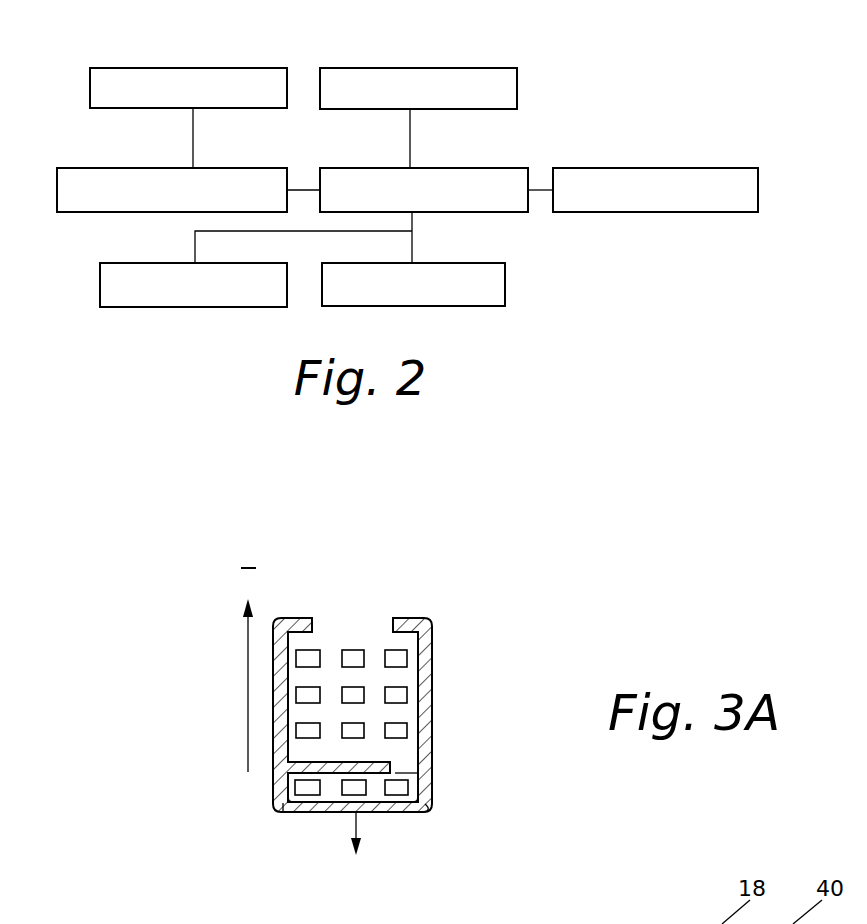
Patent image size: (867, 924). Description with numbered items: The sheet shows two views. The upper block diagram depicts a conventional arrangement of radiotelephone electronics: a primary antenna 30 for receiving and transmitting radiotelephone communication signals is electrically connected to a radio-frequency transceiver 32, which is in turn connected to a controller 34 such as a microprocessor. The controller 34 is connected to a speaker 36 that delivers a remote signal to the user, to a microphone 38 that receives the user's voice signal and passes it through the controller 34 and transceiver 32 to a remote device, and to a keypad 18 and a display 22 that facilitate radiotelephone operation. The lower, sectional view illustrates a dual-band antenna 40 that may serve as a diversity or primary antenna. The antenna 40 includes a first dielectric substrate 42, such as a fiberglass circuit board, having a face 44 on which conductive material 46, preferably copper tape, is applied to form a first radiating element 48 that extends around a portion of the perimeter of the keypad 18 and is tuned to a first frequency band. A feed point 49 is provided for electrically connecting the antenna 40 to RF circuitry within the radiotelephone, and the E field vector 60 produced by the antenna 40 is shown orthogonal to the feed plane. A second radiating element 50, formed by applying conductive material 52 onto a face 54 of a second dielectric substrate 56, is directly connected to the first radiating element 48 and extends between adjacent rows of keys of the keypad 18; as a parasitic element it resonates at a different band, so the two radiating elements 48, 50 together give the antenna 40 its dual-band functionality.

In FIG. 2, the keypad 18 is at (120, 263).
In FIG. 3A, the keypad 18 is at (360, 632).
In FIG. 2, the display 22 is at (487, 263).
In FIG. 2, the primary antenna 30 is at (256, 68).
In FIG. 2, the radio-frequency transceiver 32 is at (250, 168).
In FIG. 2, the controller 34 is at (500, 168).
In FIG. 2, the speaker 36 is at (490, 68).
In FIG. 2, the microphone 38 is at (725, 168).
In FIG. 3A, the dual-band antenna 40 is at (480, 664).
In FIG. 3A, the first dielectric substrate 42 is at (297, 777).
In FIG. 3A, the face 44 is at (435, 805).
In FIG. 3A, the conductive material 46 is at (283, 805).
In FIG. 3A, the first radiating element 48 is at (440, 715).
In FIG. 3A, the feed point 49 is at (360, 814).
In FIG. 3A, the second radiating element 50 is at (404, 757).
In FIG. 3A, the conductive material 52 is at (343, 762).
In FIG. 3A, the face 54 is at (400, 772).
In FIG. 3A, the second dielectric substrate 56 is at (302, 762).
In FIG. 3A, the E field vector 60 is at (247, 648).